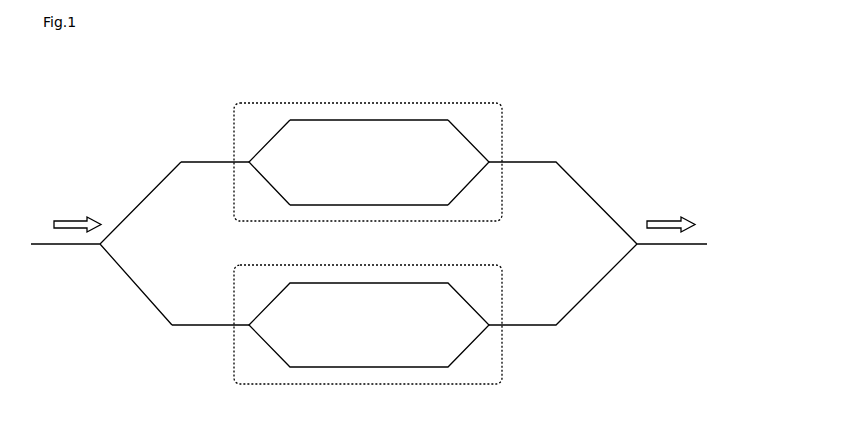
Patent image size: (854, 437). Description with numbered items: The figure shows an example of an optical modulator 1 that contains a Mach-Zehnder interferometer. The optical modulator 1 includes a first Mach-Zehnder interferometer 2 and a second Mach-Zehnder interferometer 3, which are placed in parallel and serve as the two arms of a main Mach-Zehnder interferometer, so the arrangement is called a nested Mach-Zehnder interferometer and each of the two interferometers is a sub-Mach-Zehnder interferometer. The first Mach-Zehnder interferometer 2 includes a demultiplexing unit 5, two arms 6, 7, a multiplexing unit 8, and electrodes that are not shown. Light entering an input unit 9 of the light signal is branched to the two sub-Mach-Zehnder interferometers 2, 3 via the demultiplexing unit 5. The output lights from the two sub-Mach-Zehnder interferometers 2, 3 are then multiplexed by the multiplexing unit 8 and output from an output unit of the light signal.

The optical modulator 1 is at (450, 95).
The first Mach-Zehnder interferometer 2 is at (250, 102).
The second Mach-Zehnder interferometer 3 is at (234, 366).
The demultiplexing unit 5 is at (249, 163).
The arm 6 is at (358, 120).
The arm 7 is at (385, 205).
The multiplexing unit 8 is at (492, 161).
The input unit 9 is at (100, 245).